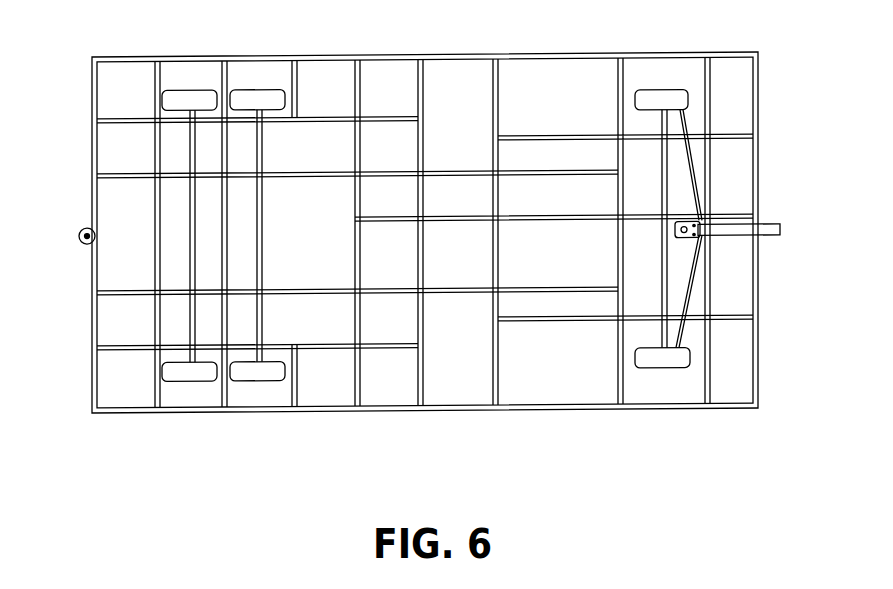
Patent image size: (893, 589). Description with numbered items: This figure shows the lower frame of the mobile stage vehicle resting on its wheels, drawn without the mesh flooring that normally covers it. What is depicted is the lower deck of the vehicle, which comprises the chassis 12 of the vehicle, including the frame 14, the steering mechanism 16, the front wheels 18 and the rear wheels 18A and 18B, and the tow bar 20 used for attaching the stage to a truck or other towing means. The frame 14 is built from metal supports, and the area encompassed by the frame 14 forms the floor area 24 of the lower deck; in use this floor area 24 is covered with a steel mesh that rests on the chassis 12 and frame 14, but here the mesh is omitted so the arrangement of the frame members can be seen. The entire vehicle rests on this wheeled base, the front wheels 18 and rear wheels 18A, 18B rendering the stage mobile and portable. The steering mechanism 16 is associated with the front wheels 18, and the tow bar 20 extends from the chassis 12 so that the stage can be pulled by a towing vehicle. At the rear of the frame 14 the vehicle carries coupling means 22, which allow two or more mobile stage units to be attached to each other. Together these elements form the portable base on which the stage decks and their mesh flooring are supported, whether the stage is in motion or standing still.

The chassis 12 is at (262, 138).
The frame 14 is at (420, 120).
The steering mechanism 16 is at (698, 242).
The front wheels 18 is at (672, 372).
The rear wheel 18A is at (275, 376).
The rear wheel 18B is at (208, 376).
The tow bar 20 is at (773, 228).
The coupling means 22 is at (83, 230).
The floor area 24 is at (534, 275).